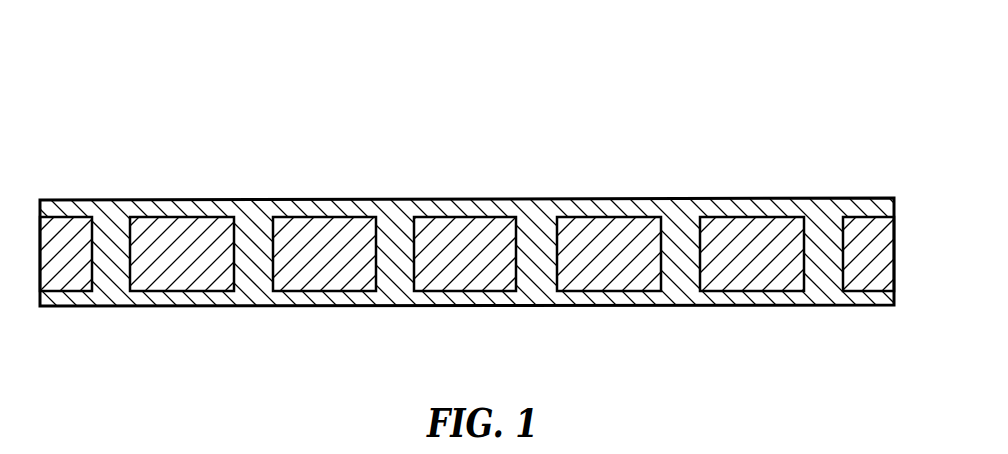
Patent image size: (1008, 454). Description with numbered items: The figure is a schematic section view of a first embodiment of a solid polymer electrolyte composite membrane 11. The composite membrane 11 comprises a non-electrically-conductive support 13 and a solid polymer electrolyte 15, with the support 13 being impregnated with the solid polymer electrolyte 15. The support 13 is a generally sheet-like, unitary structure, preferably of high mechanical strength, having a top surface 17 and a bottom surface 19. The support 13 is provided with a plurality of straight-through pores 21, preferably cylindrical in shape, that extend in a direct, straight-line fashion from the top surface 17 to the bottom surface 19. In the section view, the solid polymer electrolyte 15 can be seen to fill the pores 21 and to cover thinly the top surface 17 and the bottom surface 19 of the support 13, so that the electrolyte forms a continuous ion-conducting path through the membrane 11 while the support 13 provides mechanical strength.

The solid polymer electrolyte composite membrane 11 is at (357, 72).
The non-electrically-conductive support 13 is at (287, 292).
The solid polymer electrolyte 15 is at (537, 230).
The top surface 17 is at (593, 220).
The bottom surface 19 is at (600, 292).
The straight-through pores 21 is at (96, 277).